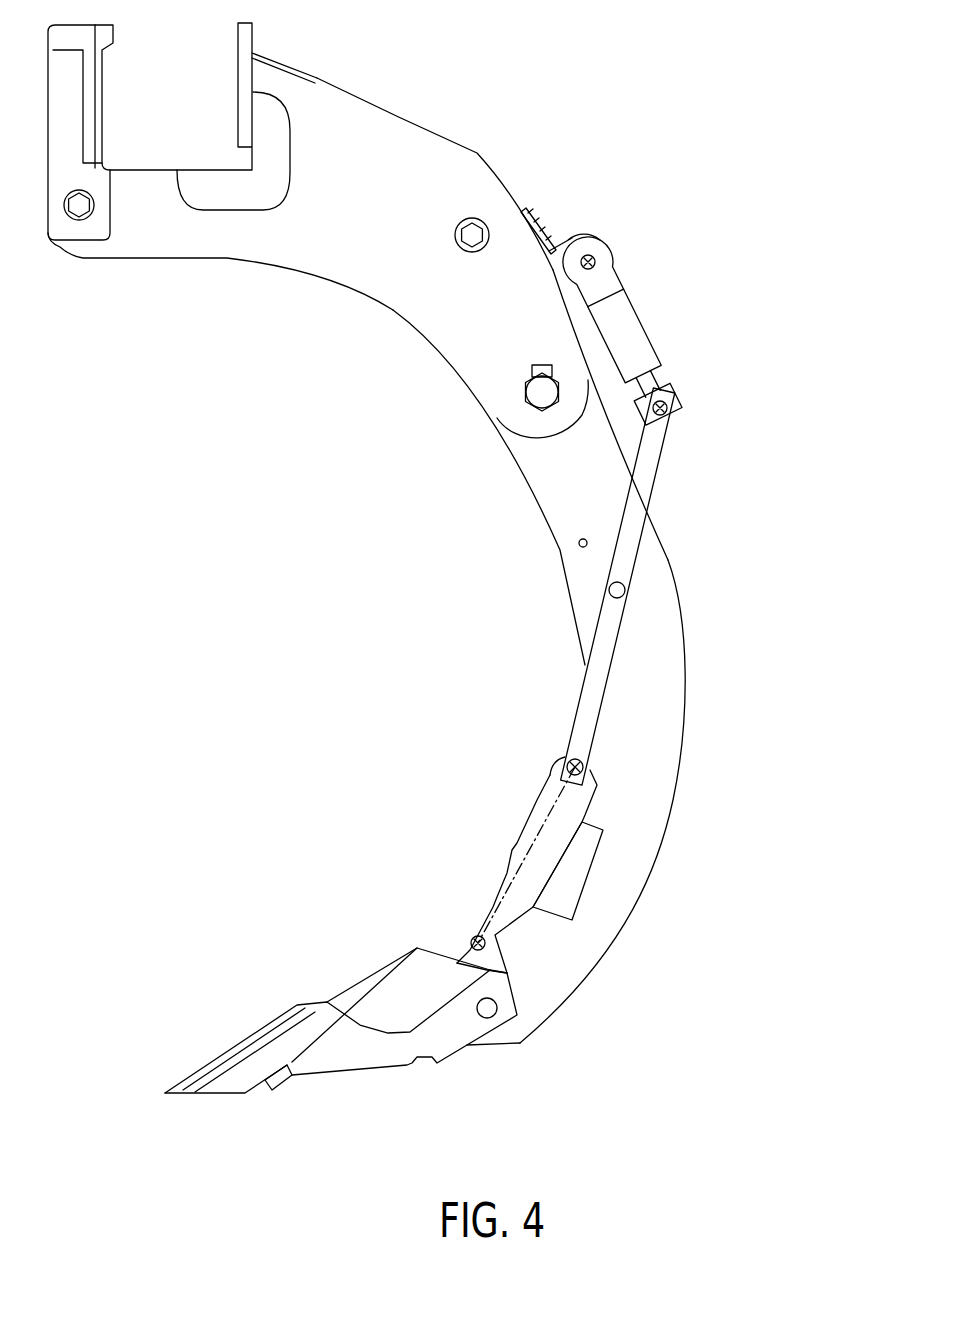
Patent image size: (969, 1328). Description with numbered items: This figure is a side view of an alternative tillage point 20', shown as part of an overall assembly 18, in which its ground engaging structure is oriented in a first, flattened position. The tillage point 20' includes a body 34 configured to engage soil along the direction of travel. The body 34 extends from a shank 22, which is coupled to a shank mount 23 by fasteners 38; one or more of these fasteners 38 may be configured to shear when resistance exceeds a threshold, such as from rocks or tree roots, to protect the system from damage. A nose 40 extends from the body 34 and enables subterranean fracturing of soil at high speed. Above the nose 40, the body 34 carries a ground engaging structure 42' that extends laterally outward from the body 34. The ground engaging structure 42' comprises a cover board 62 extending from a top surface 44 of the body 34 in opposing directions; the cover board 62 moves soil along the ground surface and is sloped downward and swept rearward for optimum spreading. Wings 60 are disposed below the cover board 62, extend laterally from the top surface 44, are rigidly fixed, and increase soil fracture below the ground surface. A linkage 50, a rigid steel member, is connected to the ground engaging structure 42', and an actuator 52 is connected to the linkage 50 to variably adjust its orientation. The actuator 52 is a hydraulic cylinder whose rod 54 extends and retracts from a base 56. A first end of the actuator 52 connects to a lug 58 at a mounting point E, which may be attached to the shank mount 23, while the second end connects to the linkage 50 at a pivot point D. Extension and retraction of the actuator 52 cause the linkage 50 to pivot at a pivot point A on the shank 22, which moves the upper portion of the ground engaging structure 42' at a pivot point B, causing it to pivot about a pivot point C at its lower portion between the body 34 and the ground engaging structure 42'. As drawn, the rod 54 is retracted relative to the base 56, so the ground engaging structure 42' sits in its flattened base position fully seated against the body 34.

The row unit / tillage assembly 18 is at (684, 119).
The tillage point 20' is at (305, 972).
The shank 22 is at (583, 577).
The shank mount 23 is at (478, 150).
The body 34 is at (350, 1058).
The fasteners 38 is at (470, 255).
The nose 40 is at (170, 1081).
The ground engaging structure 42' is at (493, 865).
The top surface 44 is at (580, 631).
The linkage 50 is at (668, 450).
The actuator 52 is at (666, 351).
The rod 54 is at (665, 375).
The base 56 is at (622, 320).
The lug 58 is at (595, 254).
The wings 60 is at (368, 997).
The cover board 62 is at (499, 864).
The pivot point A is at (630, 600).
The pivot point B is at (566, 758).
The pivot point C is at (469, 936).
The pivot point D is at (674, 412).
The mounting point E is at (600, 258).